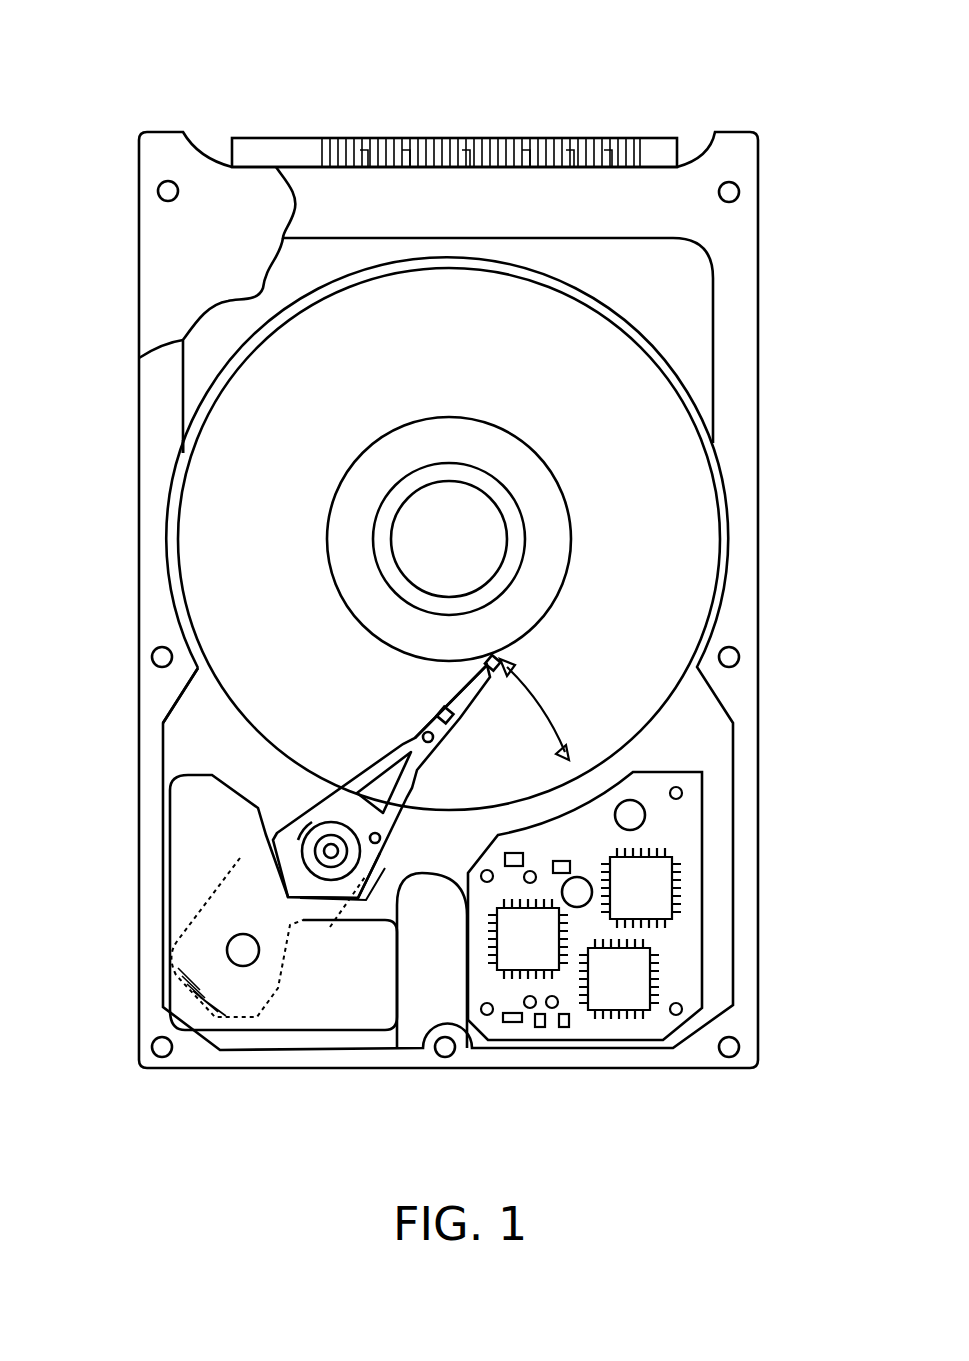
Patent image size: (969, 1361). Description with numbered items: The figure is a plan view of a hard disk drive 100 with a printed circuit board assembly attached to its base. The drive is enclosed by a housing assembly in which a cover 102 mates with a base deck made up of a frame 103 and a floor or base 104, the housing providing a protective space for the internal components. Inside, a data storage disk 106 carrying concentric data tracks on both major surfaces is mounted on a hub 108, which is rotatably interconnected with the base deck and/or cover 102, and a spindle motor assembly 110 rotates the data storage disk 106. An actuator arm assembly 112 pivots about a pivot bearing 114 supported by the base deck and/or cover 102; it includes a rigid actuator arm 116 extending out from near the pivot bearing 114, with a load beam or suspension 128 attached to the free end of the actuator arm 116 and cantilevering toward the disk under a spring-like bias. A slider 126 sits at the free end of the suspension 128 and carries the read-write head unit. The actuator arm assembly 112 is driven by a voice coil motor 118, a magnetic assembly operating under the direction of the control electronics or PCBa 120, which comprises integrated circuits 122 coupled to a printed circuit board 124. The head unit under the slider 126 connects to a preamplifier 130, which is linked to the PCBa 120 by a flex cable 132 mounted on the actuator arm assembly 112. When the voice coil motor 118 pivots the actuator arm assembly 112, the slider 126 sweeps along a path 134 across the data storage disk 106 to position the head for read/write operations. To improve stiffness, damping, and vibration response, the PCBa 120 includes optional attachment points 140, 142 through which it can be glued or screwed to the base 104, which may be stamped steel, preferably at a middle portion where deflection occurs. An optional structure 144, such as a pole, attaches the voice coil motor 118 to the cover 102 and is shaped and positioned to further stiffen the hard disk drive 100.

The hard disk drive 100 is at (128, 38).
The cover 102 is at (439, 612).
The frame 103 is at (160, 612).
The base 104 is at (203, 697).
The data storage disk 106 is at (297, 422).
The hub 108 is at (332, 493).
The spindle motor assembly 110 is at (420, 555).
The actuator arm assembly 112 is at (410, 829).
The pivot bearing 114 is at (307, 853).
The actuator arm 116 is at (320, 832).
The voice coil motor 118 is at (146, 943).
The printed circuit board assembly 120 is at (700, 1078).
The integrated circuit 122 is at (645, 882).
The printed circuit board 124 is at (673, 945).
The slider 126 is at (494, 660).
The suspension 128 is at (455, 700).
The preamplifier 130 is at (378, 862).
The flex cable 132 is at (385, 882).
The path 134 is at (549, 707).
The attachment point 140 is at (645, 830).
The attachment point 142 is at (588, 882).
The structure 144 is at (250, 968).